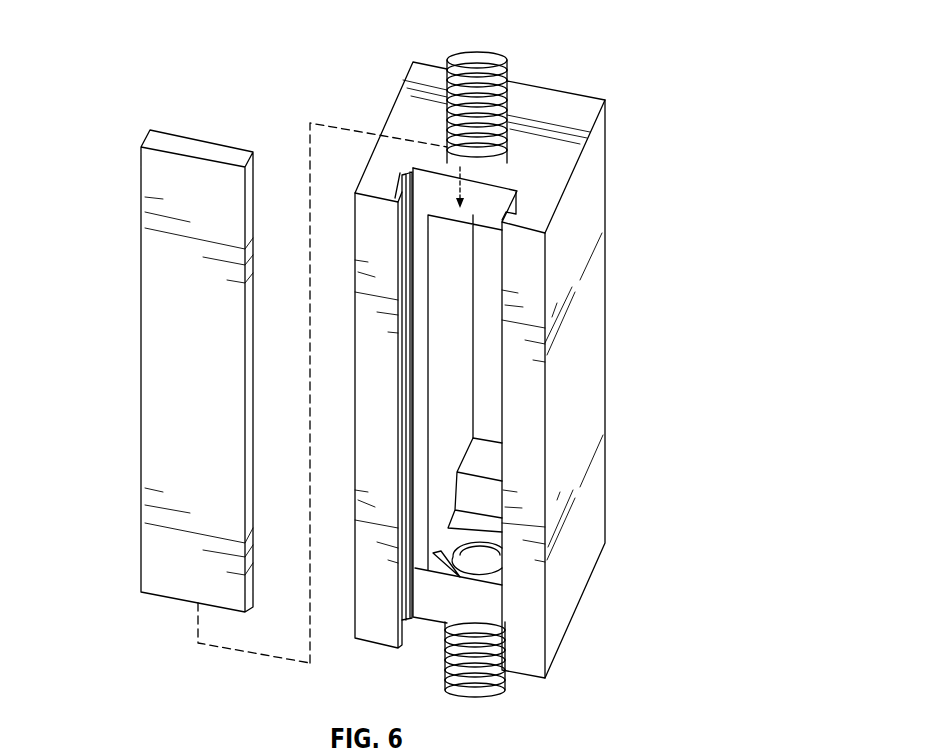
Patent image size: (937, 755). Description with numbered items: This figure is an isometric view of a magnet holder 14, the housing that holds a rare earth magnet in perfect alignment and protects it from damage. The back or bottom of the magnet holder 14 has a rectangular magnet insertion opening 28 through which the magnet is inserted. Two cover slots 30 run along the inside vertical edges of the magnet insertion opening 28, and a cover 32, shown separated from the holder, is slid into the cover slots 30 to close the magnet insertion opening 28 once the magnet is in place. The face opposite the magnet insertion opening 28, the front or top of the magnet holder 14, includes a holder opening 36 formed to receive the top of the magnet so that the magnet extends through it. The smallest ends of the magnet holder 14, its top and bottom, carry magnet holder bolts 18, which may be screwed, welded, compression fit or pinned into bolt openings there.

The magnet holder 14 is at (92, 53).
The magnet holder bolt 18 is at (484, 56).
The magnet insertion opening 28 is at (447, 393).
The cover slot 30 is at (521, 194).
The cover 32 is at (162, 352).
The holder opening 36 is at (483, 307).